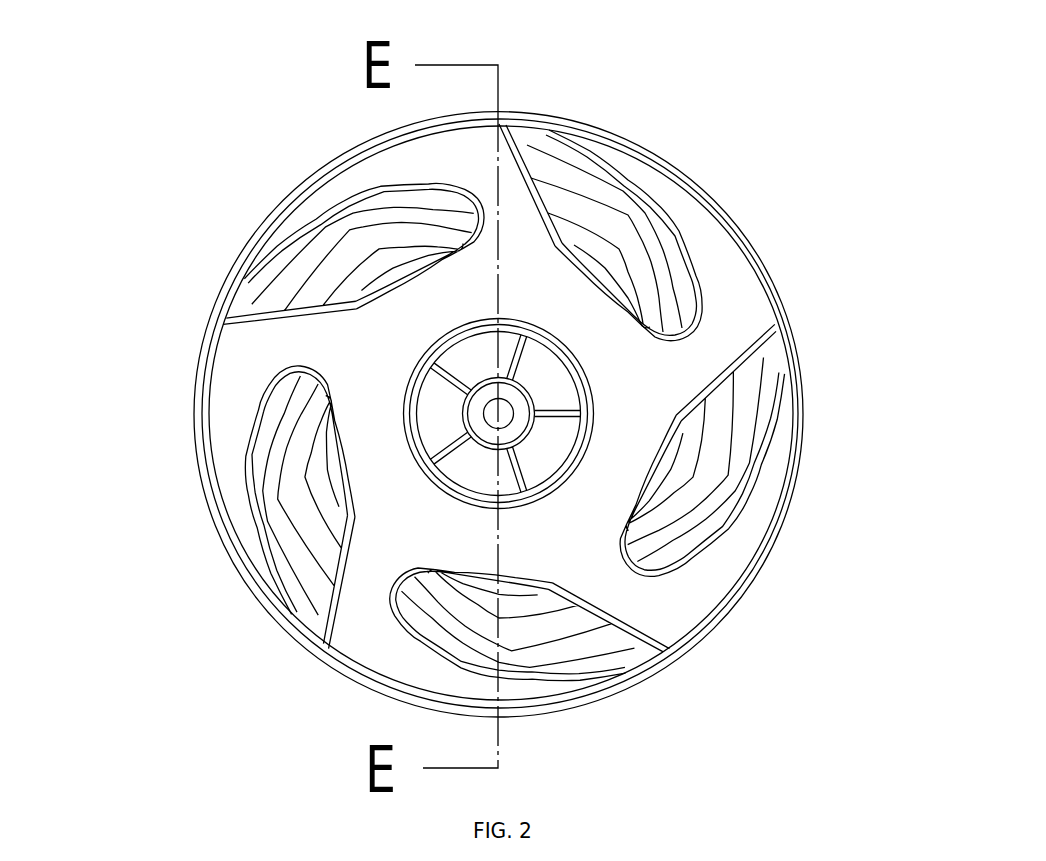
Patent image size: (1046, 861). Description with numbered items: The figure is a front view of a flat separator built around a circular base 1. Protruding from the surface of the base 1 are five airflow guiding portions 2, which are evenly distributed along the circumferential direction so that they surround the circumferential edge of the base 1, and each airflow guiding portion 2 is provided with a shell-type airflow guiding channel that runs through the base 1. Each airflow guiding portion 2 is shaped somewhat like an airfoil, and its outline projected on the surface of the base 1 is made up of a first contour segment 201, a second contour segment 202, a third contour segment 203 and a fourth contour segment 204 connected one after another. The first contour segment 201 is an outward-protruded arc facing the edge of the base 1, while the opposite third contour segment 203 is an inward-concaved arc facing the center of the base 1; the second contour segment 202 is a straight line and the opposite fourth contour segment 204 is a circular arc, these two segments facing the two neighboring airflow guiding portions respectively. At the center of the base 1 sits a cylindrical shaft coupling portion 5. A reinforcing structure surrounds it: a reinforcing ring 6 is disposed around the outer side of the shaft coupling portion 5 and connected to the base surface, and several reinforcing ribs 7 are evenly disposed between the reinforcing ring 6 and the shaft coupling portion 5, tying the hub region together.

The circular base 1 is at (235, 403).
The airflow guiding portion 2 is at (729, 171).
The first contour segment 201 is at (605, 166).
The second contour segment 202 is at (538, 194).
The third contour segment 203 is at (622, 290).
The fourth contour segment 204 is at (698, 328).
The shaft coupling portion 5 is at (521, 424).
The reinforcing ring 6 is at (450, 340).
The reinforcing ribs 7 is at (430, 374).